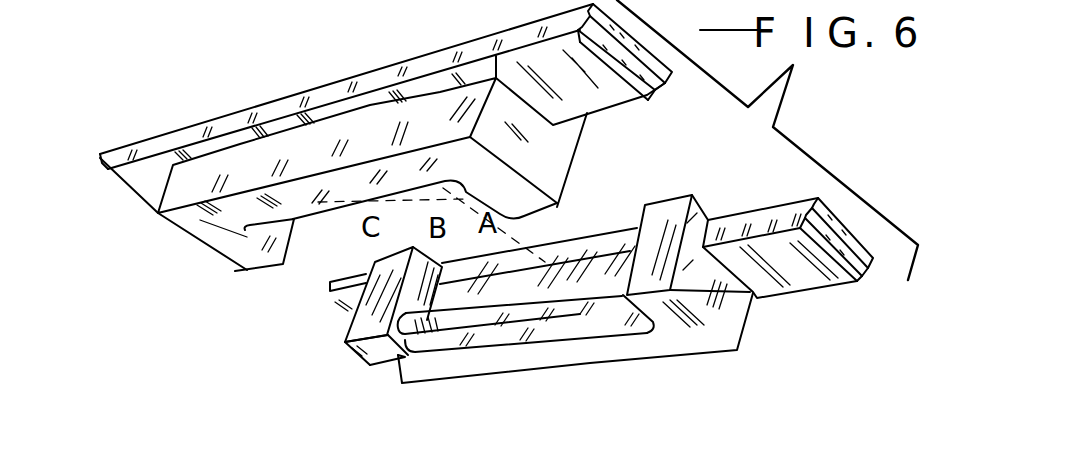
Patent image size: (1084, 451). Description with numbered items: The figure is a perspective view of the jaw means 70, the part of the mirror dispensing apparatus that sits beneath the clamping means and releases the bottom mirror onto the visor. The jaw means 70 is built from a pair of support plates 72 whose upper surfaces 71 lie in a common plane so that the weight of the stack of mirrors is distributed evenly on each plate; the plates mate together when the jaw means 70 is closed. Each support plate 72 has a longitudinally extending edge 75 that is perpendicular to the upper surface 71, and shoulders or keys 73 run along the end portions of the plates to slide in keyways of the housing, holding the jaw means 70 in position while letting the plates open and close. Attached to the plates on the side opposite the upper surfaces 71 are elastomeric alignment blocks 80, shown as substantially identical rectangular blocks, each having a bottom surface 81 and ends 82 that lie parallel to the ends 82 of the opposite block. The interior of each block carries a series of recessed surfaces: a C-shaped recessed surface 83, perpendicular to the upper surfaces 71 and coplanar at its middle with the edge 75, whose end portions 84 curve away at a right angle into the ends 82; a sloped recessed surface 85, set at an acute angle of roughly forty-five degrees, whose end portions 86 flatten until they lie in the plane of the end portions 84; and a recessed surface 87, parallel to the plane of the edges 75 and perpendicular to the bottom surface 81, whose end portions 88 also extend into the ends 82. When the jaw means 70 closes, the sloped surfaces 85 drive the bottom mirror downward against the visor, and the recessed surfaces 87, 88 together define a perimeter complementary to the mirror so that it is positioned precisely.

The jaw means 70 is at (136, 240).
The upper surfaces 71 is at (355, 76).
The support plates 72 is at (232, 107).
The keys 73 is at (100, 158).
The longitudinally extending edges 75 is at (738, 221).
The alignment blocks 80 is at (186, 256).
The bottom surfaces 81 is at (337, 181).
The ends 82 is at (245, 267).
The recessed surfaces 83 is at (570, 278).
The end portions of recessed surfaces 83 84 is at (345, 341).
The sloped recessed surfaces 85 is at (597, 308).
The end portions of recessed surfaces 85 86 is at (386, 337).
The recessed surfaces 87 is at (563, 337).
The end portions of recessed surfaces 87 88 is at (411, 362).